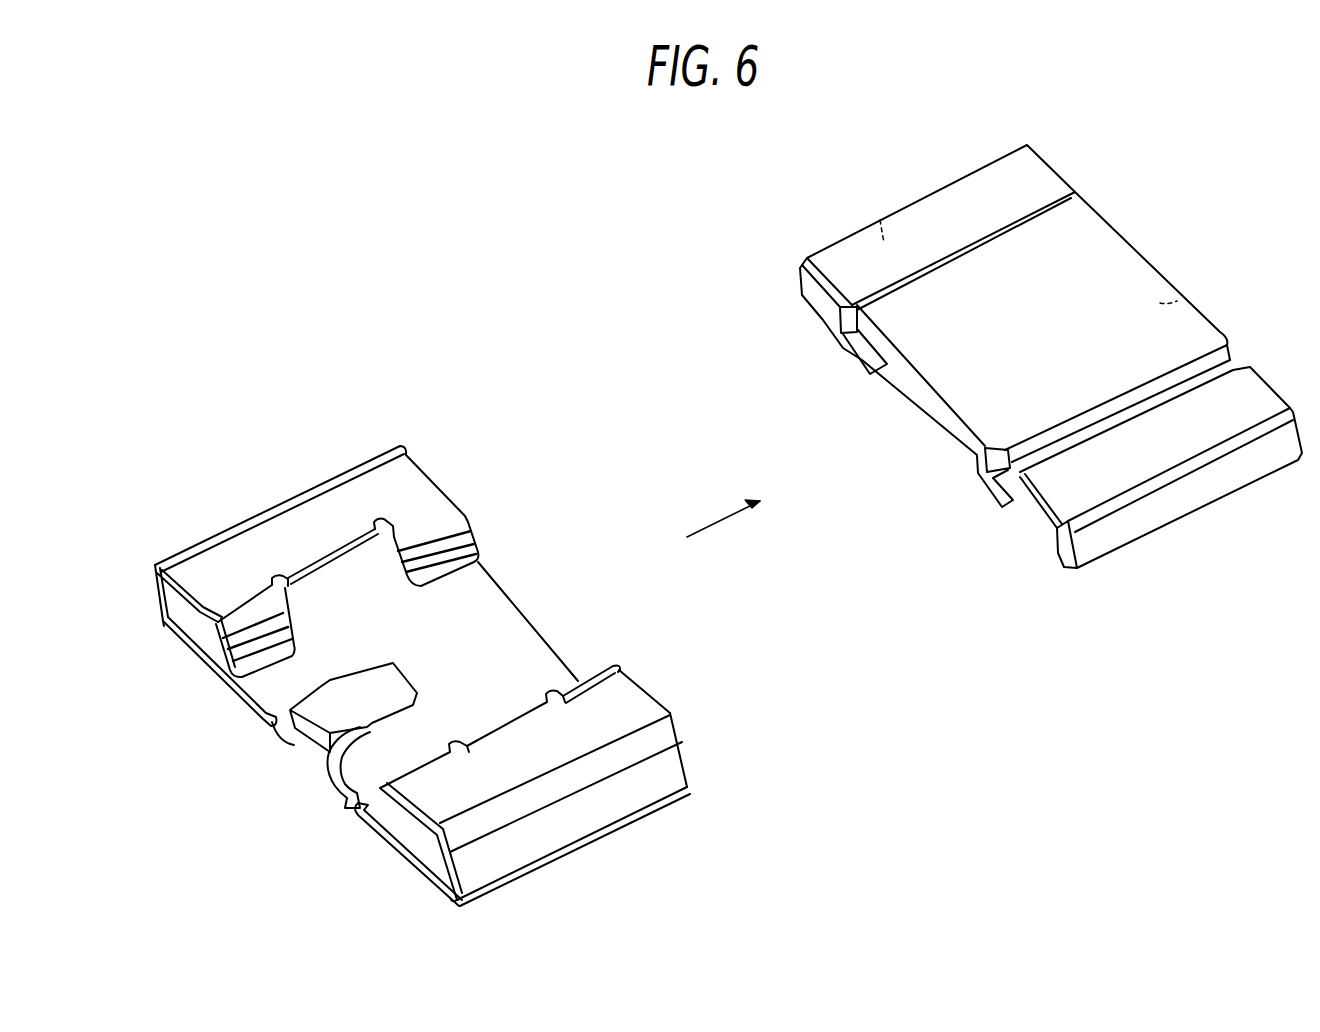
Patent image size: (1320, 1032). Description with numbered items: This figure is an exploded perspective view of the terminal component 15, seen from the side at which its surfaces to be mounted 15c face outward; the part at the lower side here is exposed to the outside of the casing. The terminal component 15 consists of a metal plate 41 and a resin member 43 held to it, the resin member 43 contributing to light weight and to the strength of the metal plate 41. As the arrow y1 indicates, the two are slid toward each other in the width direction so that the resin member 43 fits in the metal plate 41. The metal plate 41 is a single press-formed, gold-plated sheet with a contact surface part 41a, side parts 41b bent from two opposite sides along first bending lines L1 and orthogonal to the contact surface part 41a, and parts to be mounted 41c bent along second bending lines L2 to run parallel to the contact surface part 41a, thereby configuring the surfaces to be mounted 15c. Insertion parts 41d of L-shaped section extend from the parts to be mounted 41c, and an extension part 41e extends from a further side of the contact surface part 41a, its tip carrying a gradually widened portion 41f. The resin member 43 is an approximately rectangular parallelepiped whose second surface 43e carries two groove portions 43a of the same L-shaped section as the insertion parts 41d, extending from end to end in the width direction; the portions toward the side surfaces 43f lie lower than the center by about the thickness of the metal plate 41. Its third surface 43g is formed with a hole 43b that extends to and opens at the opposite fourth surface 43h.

The terminal component 15 is at (542, 208).
The surfaces to be mounted 15c is at (230, 553).
The metal plate 41 is at (426, 639).
The contact surface part 41a is at (523, 628).
The side parts 41b is at (155, 612).
The parts to be mounted 41c is at (414, 490).
The insertion parts 41d is at (237, 674).
The extension part 41e is at (307, 734).
The widened portion 41f is at (334, 685).
The first bending lines L1 is at (163, 640).
The second bending lines L2 is at (395, 455).
The arrow y1 is at (716, 520).
The resin member 43 is at (1043, 349).
The groove portions 43a is at (860, 352).
The hole 43b is at (928, 416).
The second surface 43e is at (1118, 262).
The side surfaces 43f is at (877, 220).
The third surface 43g is at (1040, 533).
The fourth surface 43h is at (1180, 293).